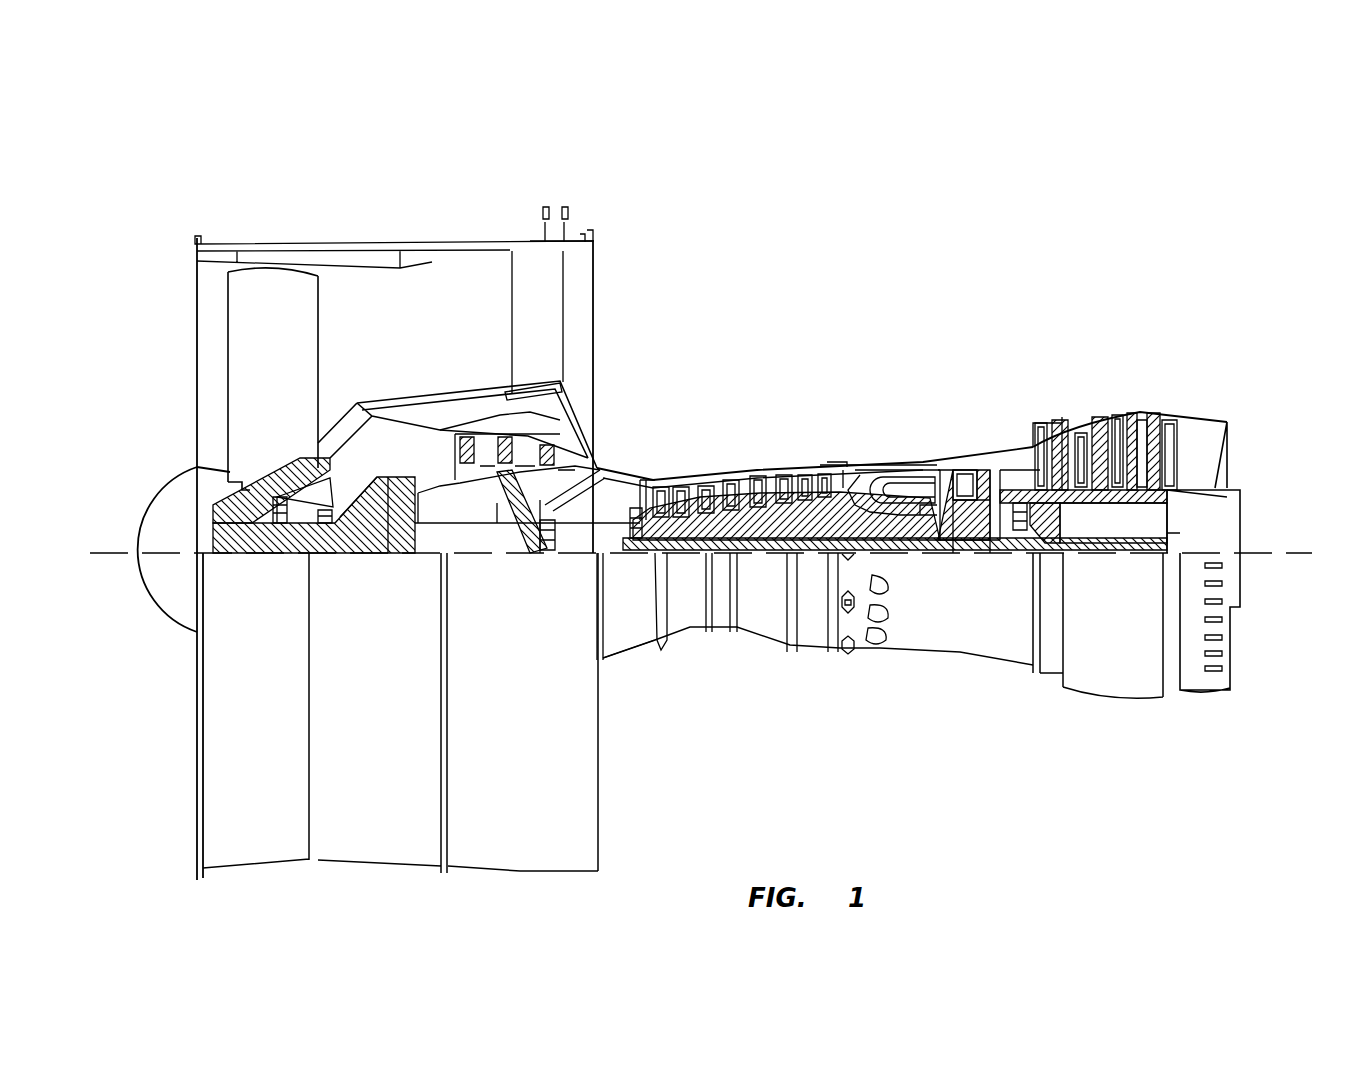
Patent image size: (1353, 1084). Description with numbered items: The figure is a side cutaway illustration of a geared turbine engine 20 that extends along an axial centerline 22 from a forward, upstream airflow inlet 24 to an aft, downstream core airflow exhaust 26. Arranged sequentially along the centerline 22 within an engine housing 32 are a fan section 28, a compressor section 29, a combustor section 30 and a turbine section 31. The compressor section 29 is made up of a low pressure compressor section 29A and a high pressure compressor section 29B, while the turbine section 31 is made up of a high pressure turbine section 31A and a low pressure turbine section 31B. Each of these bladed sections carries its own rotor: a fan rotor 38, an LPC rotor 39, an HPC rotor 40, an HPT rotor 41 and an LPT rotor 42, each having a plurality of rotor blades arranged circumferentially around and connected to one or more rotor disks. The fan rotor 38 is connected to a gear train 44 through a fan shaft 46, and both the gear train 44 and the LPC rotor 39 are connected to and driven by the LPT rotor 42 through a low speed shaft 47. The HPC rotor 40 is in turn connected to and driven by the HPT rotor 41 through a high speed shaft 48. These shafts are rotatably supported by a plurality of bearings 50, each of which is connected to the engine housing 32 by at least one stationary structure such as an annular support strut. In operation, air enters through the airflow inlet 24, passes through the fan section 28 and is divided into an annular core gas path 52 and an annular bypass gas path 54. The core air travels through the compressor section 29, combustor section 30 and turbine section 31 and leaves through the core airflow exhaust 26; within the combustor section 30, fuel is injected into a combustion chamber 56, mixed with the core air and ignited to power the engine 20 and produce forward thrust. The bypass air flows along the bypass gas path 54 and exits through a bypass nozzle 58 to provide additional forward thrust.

The geared turbine engine 20 is at (1083, 215).
The axial centerline 22 is at (1303, 548).
The airflow inlet 24 is at (197, 293).
The core airflow exhaust 26 is at (1233, 452).
The fan section 28 is at (200, 216).
The compressor section 29 is at (433, 146).
The low pressure compressor (LPC) section 29A is at (597, 205).
The high pressure compressor (HPC) section 29B is at (620, 393).
The combustor section 30 is at (832, 393).
The turbine section 31 is at (937, 328).
The high pressure turbine (HPT) section 31A is at (937, 393).
The low pressure turbine (LPT) section 31B is at (1027, 393).
The engine housing 32 is at (610, 680).
The fan rotor 38 is at (205, 474).
The LPC rotor 39 is at (497, 532).
The HPC rotor 40 is at (770, 554).
The HPT rotor 41 is at (967, 554).
The LPT rotor 42 is at (1107, 506).
The gear train 44 is at (397, 554).
The fan shaft 46 is at (237, 554).
The low speed shaft 47 is at (1117, 554).
The high speed shaft 48 is at (900, 554).
The bearings 50 is at (298, 554).
The core gas path 52 is at (616, 471).
The bypass gas path 54 is at (447, 354).
The combustion chamber 56 is at (890, 487).
The bypass nozzle 58 is at (593, 305).